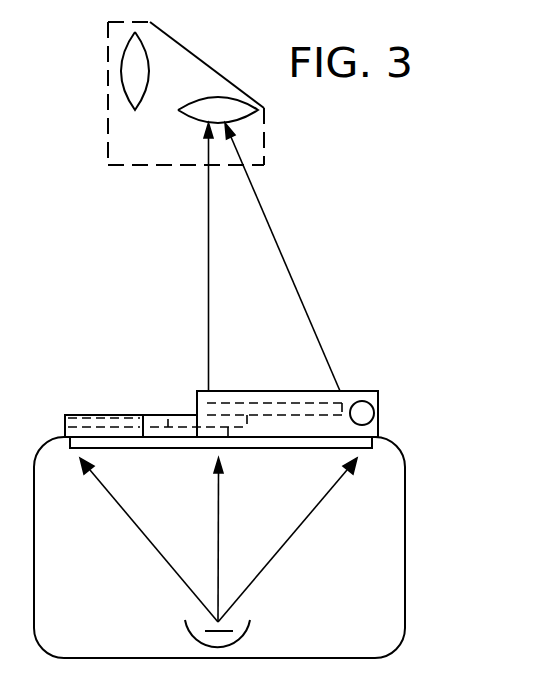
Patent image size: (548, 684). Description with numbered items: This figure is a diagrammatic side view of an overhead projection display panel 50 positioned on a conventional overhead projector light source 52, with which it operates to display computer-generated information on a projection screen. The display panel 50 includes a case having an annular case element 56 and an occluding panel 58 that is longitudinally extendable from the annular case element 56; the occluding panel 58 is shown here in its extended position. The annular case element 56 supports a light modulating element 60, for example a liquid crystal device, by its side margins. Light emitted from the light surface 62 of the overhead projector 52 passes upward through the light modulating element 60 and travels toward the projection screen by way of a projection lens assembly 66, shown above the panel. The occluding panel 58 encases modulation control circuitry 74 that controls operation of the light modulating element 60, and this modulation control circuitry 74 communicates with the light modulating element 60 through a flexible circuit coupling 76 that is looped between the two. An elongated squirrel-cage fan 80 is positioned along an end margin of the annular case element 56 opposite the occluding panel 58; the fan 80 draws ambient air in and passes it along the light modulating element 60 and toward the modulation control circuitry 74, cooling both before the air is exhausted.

The overhead projection display panel 50 is at (333, 380).
The overhead projector light source 52 is at (418, 501).
The annular case element 56 is at (382, 422).
The occluding panel 58 is at (78, 415).
The light modulating element 60 is at (240, 402).
The light surface 62 is at (307, 448).
The projection lens assembly 66 is at (240, 123).
The modulation control circuitry 74 is at (103, 416).
The flexible circuit coupling 76 is at (168, 419).
The squirrel-cage fan 80 is at (366, 401).